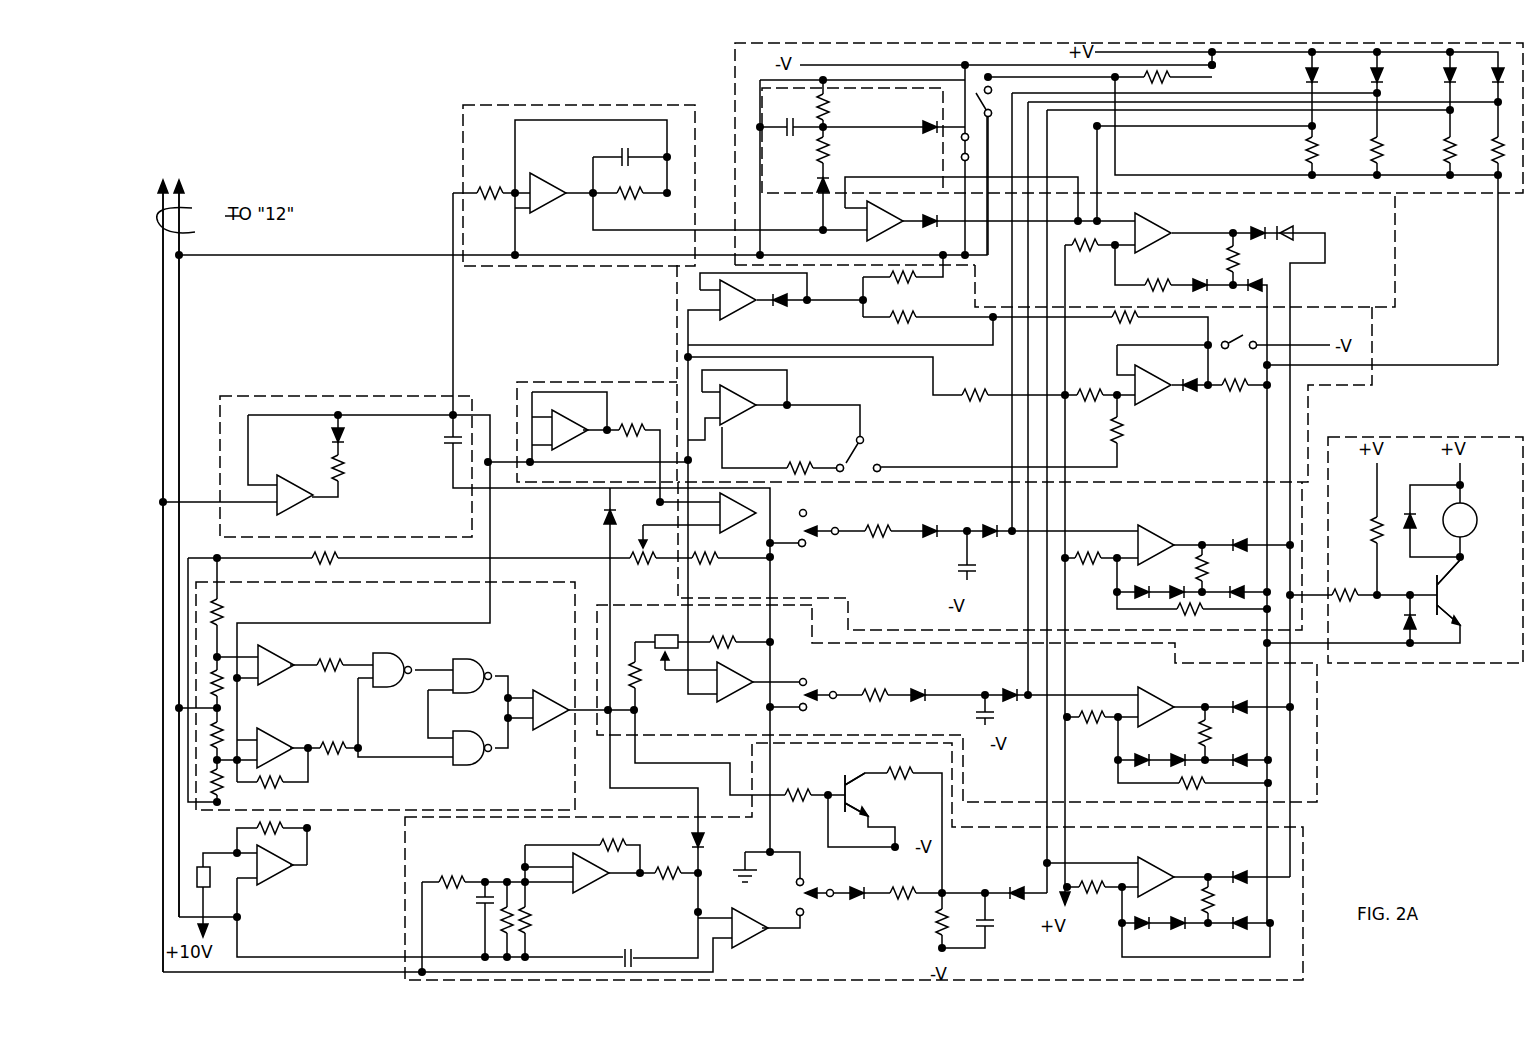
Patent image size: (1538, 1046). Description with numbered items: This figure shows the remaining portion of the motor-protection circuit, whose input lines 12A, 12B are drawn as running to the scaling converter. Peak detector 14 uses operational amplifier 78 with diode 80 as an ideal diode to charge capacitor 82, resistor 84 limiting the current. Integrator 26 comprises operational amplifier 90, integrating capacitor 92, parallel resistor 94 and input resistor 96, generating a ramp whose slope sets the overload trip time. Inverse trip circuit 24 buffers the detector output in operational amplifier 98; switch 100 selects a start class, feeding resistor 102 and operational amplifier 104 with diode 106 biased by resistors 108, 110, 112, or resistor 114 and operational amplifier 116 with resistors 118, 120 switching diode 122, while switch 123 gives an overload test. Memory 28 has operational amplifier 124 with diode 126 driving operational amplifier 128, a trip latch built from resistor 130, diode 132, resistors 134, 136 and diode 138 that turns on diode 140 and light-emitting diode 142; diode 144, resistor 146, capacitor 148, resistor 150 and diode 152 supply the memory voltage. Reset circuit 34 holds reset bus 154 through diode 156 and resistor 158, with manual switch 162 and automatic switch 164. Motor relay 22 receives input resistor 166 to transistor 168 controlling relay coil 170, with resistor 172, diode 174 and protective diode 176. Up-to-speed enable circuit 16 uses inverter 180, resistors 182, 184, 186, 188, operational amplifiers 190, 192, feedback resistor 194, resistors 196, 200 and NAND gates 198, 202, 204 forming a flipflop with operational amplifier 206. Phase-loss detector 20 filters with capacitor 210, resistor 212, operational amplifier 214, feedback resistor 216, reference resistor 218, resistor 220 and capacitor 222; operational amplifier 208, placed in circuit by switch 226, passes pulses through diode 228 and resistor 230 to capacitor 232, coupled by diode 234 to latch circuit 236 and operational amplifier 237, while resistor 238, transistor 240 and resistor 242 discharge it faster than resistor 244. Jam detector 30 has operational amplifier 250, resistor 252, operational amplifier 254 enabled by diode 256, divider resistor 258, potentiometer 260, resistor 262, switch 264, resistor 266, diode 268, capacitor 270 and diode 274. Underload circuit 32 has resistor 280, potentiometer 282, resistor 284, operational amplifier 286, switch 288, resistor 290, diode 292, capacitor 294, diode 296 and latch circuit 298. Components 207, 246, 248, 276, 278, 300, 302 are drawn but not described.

The output line 12A is at (181, 184).
The output line 12B is at (155, 190).
The peak detector 14 is at (260, 393).
The up-to-speed enable circuit 16 is at (385, 696).
The phase-loss detector 20 is at (1305, 888).
The motor relay 22 is at (1475, 665).
The inverse trip circuit 24 is at (1377, 338).
The integrator 26 is at (455, 137).
The memory 28 is at (1397, 277).
The jam detector 30 is at (635, 380).
The underload circuit 32 is at (1317, 732).
The reset circuit 34 is at (733, 80).
The operational amplifier 78 is at (301, 506).
The diode 80 is at (330, 435).
The capacitor 82 is at (443, 440).
The resistor 84 is at (347, 465).
The operational amplifier 90 is at (545, 222).
The integrating capacitor 92 is at (620, 147).
The resistor 94 is at (634, 196).
The resistor 96 is at (490, 187).
The operational amplifier 98 is at (747, 415).
The switch 100 is at (872, 460).
The resistor 102 is at (802, 465).
The operational amplifier 104 is at (740, 310).
The diode 106 is at (782, 308).
The resistor 108 is at (977, 406).
The resistor 110 is at (906, 321).
The resistor 112 is at (904, 280).
The resistor 114 is at (1123, 435).
The operational amplifier 116 is at (1163, 420).
The resistor 118 is at (1237, 393).
The resistor 120 is at (1120, 322).
The diode 122 is at (1190, 391).
The switch 123 is at (1257, 340).
The operational amplifier 124 is at (893, 227).
The diode 126 is at (935, 208).
The operational amplifier 128 is at (1152, 224).
The resistor 130 is at (1230, 263).
The diode 132 is at (1200, 292).
The resistor 134 is at (1158, 282).
The resistor 136 is at (1087, 253).
The diode 138 is at (1260, 282).
The diode 140 is at (1257, 228).
The light-emitting diode 142 is at (1290, 225).
The diode 144 is at (815, 188).
The resistor 146 is at (845, 128).
The capacitor 148 is at (781, 142).
The resistor 150 is at (852, 140).
The diode 152 is at (920, 125).
The reset bus 154 is at (1308, 75).
The diode 156 is at (1212, 64).
The resistor 158 is at (1158, 90).
The switch 162 is at (958, 150).
The switch 164 is at (1010, 108).
The input resistor 166 is at (1345, 592).
The transistor 168 is at (1442, 595).
The relay coil 170 is at (1467, 530).
The resistor 172 is at (1365, 530).
The diode 174 is at (1397, 622).
The diode 176 is at (1403, 510).
The inverter 180 is at (292, 855).
The resistor 182 is at (223, 617).
The resistor 184 is at (223, 683).
The resistor 186 is at (213, 785).
The resistor 188 is at (210, 735).
The operational amplifier 190 is at (260, 660).
The operational amplifier 192 is at (273, 740).
The feedback resistor 194 is at (280, 785).
The resistor 196 is at (330, 662).
The NAND gate 198 is at (402, 655).
The resistor 200 is at (338, 752).
The NAND gate 202 is at (471, 760).
The NAND gate 204 is at (482, 662).
The operational amplifier 206 is at (550, 728).
The resistor 207 is at (453, 880).
The operational amplifier 208 is at (749, 943).
The capacitor 210 is at (482, 902).
The resistor 212 is at (504, 922).
The operational amplifier 214 is at (583, 890).
The feedback resistor 216 is at (615, 846).
The reference resistor 218 is at (528, 920).
The resistor 220 is at (672, 875).
The capacitor 222 is at (625, 955).
The switch 226 is at (806, 913).
The diode 228 is at (853, 890).
The resistor 230 is at (902, 900).
The capacitor 232 is at (995, 926).
The diode 234 is at (1015, 887).
The latch circuit 236 is at (1226, 900).
The operational amplifier 237 is at (1173, 865).
The resistor 238 is at (797, 792).
The transistor 240 is at (855, 787).
The resistor 242 is at (898, 767).
The resistor 244 is at (935, 925).
The diode 246 is at (1446, 77).
The resistor 248 is at (1447, 147).
The operational amplifier 250 is at (570, 412).
The resistor 252 is at (630, 437).
The operational amplifier 254 is at (747, 510).
The diode 256 is at (603, 522).
The resistor 258 is at (327, 561).
The potentiometer 260 is at (643, 560).
The resistor 262 is at (705, 562).
The switch 264 is at (807, 548).
The resistor 266 is at (880, 528).
The diode 268 is at (926, 538).
The capacitor 270 is at (955, 570).
The diode 274 is at (990, 525).
The diode 276 is at (1373, 75).
The resistor 278 is at (1370, 149).
The resistor 280 is at (640, 675).
The potentiometer 282 is at (658, 635).
The resistor 284 is at (727, 631).
The operational amplifier 286 is at (730, 700).
The switch 288 is at (812, 710).
The resistor 290 is at (877, 693).
The diode 292 is at (918, 701).
The capacitor 294 is at (995, 720).
The diode 296 is at (1008, 690).
The latch circuit 298 is at (1163, 738).
The diode 300 is at (1495, 80).
The resistor 302 is at (1493, 160).